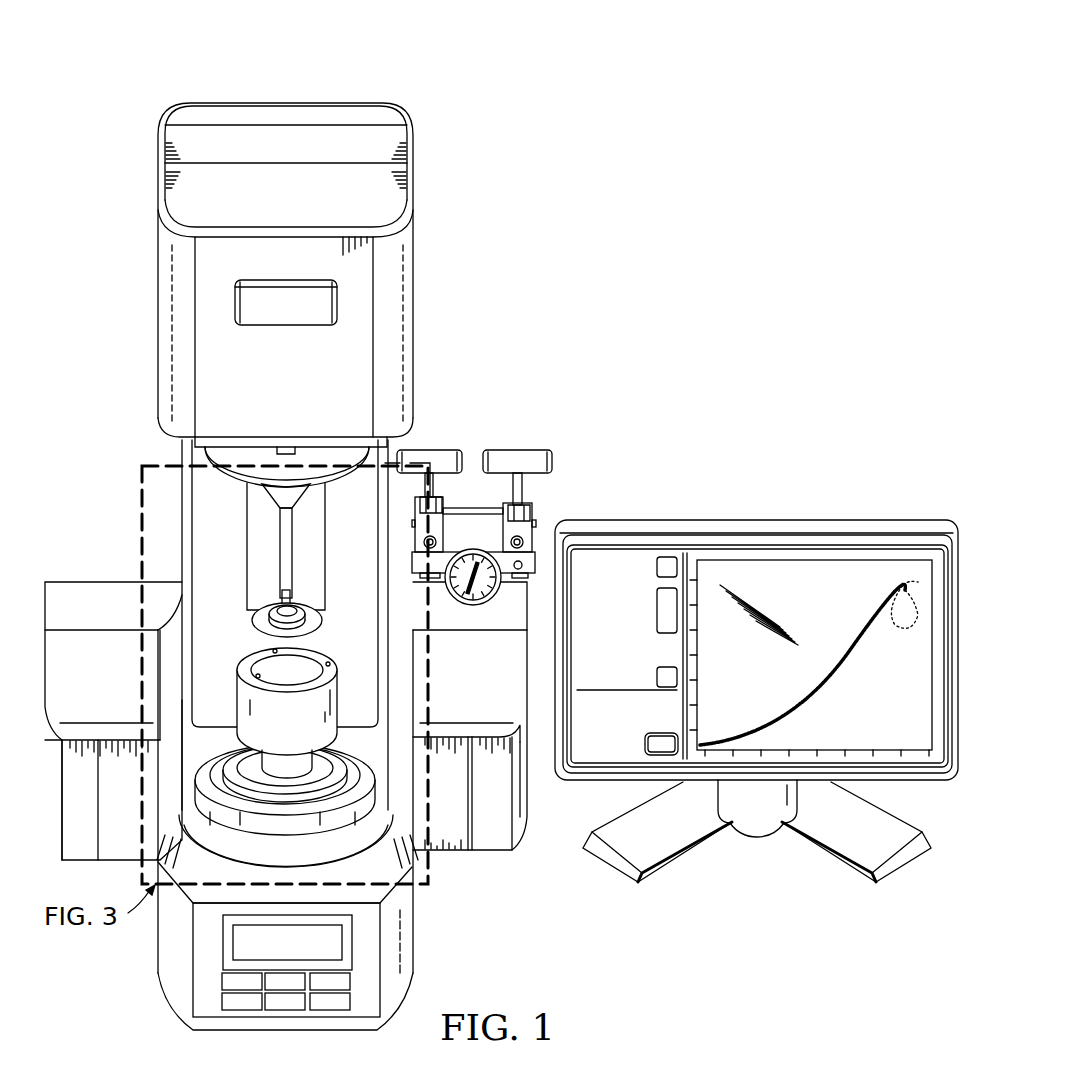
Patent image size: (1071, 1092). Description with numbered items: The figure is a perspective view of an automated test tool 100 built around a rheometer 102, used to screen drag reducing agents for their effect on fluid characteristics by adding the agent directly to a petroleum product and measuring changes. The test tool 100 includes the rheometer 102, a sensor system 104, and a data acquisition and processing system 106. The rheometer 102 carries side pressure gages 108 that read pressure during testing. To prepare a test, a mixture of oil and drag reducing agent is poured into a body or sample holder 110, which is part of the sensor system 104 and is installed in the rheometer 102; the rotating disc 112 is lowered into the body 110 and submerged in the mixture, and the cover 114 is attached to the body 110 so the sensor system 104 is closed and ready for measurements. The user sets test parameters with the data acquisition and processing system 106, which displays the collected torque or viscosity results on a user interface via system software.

The automated test tool 100 is at (676, 62).
The rheometer 102 is at (242, 82).
The sensor system 104 is at (170, 528).
The data acquisition and processing system 106 is at (762, 512).
The side pressure gages 108 is at (532, 505).
The body or sample holder 110 is at (233, 695).
The rotating disc 112 is at (265, 597).
The cover 114 is at (335, 480).